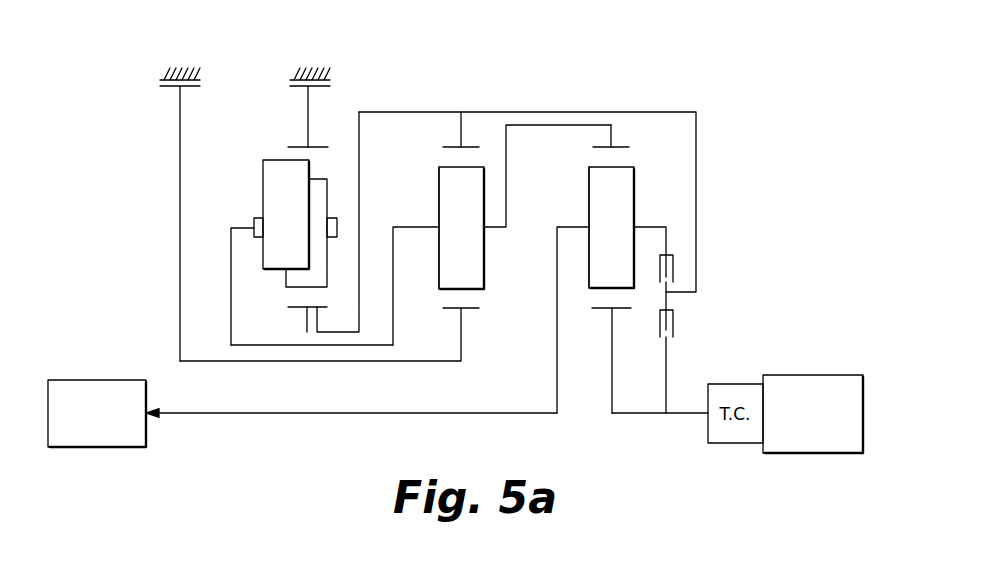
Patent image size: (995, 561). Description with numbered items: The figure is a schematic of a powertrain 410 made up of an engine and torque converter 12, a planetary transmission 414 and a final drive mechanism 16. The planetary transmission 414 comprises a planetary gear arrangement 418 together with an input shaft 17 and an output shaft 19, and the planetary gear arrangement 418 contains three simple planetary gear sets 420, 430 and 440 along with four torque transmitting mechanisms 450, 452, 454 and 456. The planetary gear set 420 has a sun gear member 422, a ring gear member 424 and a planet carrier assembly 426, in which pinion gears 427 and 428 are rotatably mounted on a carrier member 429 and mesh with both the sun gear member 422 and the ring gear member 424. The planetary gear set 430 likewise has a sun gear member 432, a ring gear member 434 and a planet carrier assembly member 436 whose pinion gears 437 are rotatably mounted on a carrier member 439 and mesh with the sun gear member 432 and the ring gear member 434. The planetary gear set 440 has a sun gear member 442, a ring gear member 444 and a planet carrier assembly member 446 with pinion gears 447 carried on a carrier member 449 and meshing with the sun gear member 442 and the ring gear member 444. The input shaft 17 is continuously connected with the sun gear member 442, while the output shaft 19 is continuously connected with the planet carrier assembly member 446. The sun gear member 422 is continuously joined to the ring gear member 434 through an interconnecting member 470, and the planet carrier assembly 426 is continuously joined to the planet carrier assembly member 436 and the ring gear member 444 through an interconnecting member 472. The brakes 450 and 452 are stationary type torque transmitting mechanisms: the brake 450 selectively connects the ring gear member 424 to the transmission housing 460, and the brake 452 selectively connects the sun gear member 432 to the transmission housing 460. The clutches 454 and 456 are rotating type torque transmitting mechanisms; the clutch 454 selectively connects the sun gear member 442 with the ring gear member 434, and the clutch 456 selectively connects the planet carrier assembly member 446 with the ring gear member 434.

The engine and torque converter 12 is at (799, 370).
The final drive mechanism 16 is at (112, 360).
The input shaft 17 is at (682, 415).
The output shaft 19 is at (232, 415).
The powertrain 410 is at (137, 189).
The planetary transmission 414 is at (430, 74).
The planetary gear arrangement 418 is at (567, 72).
The planetary gear set 420 is at (299, 314).
The sun gear member 422 is at (313, 311).
The ring gear member 424 is at (298, 146).
The planet carrier assembly 426 is at (246, 236).
The pinion gear 427 is at (301, 201).
The pinion gear 428 is at (327, 193).
The carrier member 429 is at (250, 225).
The planetary gear set 430 is at (453, 314).
The sun gear member 432 is at (469, 311).
The ring gear member 434 is at (452, 146).
The planet carrier assembly member 436 is at (433, 214).
The pinion gears 437 is at (477, 218).
The carrier member 439 is at (425, 226).
The planetary gear set 440 is at (603, 314).
The sun gear member 442 is at (620, 311).
The ring gear member 444 is at (626, 146).
The planet carrier assembly member 446 is at (576, 213).
The pinion gears 447 is at (627, 218).
The carrier member 449 is at (566, 226).
The brake 450 is at (288, 80).
The brake 452 is at (158, 80).
The clutch 454 is at (681, 322).
The clutch 456 is at (681, 263).
The transmission housing 460 is at (166, 68).
The interconnecting member 470 is at (380, 111).
The interconnecting member 472 is at (507, 158).